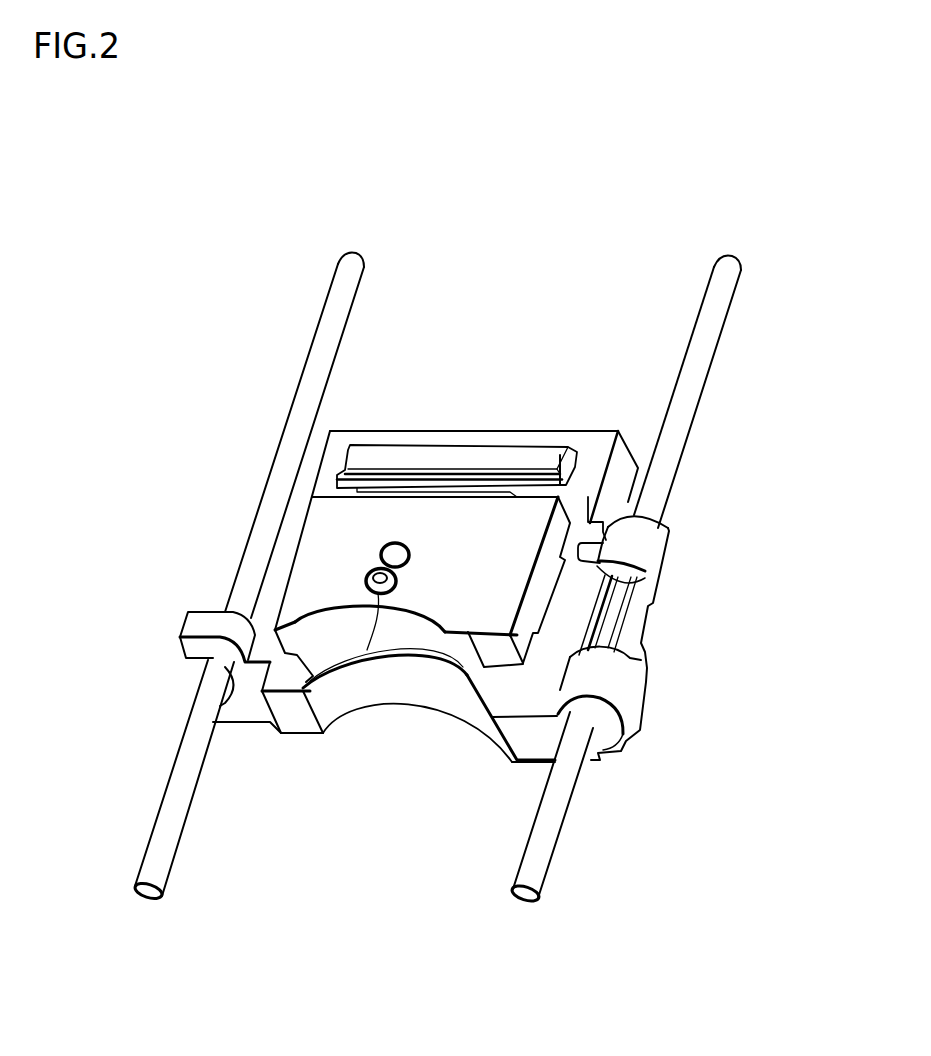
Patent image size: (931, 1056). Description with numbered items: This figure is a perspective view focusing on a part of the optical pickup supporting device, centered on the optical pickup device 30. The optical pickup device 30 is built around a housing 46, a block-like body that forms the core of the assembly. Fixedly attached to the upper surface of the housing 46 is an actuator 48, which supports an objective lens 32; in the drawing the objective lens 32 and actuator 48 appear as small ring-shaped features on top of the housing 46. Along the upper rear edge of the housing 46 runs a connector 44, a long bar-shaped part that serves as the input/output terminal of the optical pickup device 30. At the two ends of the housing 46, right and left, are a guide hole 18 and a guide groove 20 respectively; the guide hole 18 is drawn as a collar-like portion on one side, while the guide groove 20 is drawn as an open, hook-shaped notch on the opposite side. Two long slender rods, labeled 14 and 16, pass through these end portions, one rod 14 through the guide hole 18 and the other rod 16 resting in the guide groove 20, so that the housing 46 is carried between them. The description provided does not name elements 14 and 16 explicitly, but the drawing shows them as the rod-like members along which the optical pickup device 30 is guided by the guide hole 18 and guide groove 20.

The guide rod 14 is at (631, 559).
The guide rod 16 is at (254, 557).
The guide hole 18 is at (642, 550).
The guide groove 20 is at (194, 620).
The optical pickup device 30 is at (400, 427).
The objective lens 32 is at (352, 655).
The connector 44 is at (463, 461).
The housing 46 is at (437, 688).
The actuator 48 is at (395, 637).